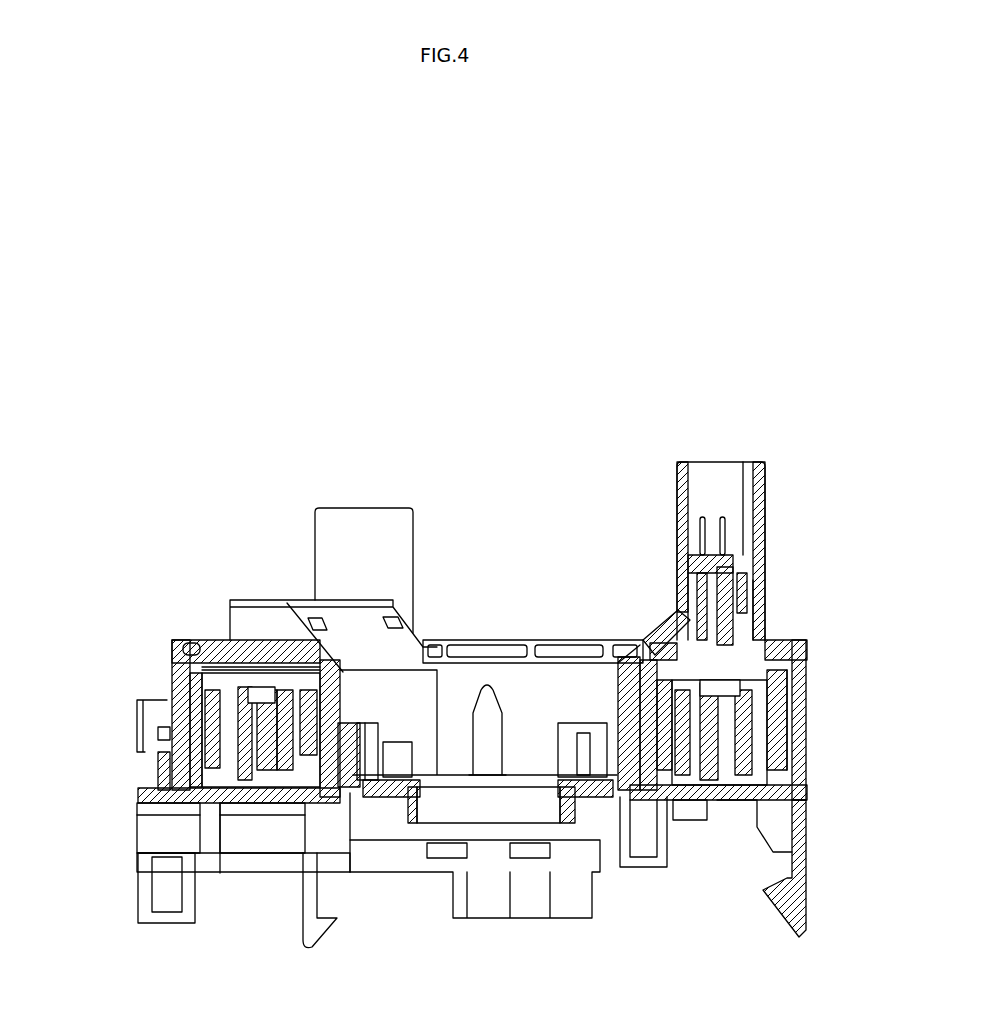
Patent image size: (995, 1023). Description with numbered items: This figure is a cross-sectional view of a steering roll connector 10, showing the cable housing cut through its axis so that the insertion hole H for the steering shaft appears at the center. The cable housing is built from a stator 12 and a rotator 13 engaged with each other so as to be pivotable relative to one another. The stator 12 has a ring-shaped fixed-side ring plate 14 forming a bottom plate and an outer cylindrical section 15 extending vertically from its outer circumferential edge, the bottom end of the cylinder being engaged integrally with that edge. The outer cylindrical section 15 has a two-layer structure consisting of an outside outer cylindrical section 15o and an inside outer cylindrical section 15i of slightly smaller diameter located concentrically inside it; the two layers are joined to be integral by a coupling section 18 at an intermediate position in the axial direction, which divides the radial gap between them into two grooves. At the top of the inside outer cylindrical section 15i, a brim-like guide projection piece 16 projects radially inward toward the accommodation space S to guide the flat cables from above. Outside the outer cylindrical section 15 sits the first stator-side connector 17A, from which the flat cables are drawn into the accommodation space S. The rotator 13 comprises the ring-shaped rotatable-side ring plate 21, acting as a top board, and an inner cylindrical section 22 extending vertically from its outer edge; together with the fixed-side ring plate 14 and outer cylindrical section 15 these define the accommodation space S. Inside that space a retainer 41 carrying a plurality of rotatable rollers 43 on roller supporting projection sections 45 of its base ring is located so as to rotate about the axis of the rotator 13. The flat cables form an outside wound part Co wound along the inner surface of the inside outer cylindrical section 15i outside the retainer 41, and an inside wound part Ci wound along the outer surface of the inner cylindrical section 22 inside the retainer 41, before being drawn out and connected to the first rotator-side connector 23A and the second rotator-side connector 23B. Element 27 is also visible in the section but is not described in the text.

The steering roll connector 10 is at (237, 508).
The stator 12 is at (243, 882).
The rotator 13 is at (505, 636).
The fixed-side ring plate 14 is at (220, 873).
The outer cylindrical section 15 is at (95, 670).
The outside outer cylindrical section 15o is at (167, 690).
The inside outer cylindrical section 15i is at (160, 762).
The guide projection piece 16 is at (197, 640).
The first stator-side connector 17A is at (137, 806).
The coupling section 18 is at (185, 700).
The rotatable-side ring plate 21 is at (207, 645).
The inner cylindrical section 22 is at (360, 670).
The first rotator-side connector 23A is at (367, 508).
The second rotator-side connector 23B is at (714, 462).
The inner wall 27 is at (780, 695).
The retainer 41 is at (790, 770).
The rotatable roller 43 is at (785, 748).
The roller supporting projection section 45 is at (760, 722).
The inside wound part Ci is at (658, 640).
The outside wound part Co is at (782, 728).
The insertion hole H is at (549, 709).
The accommodation space S is at (757, 640).